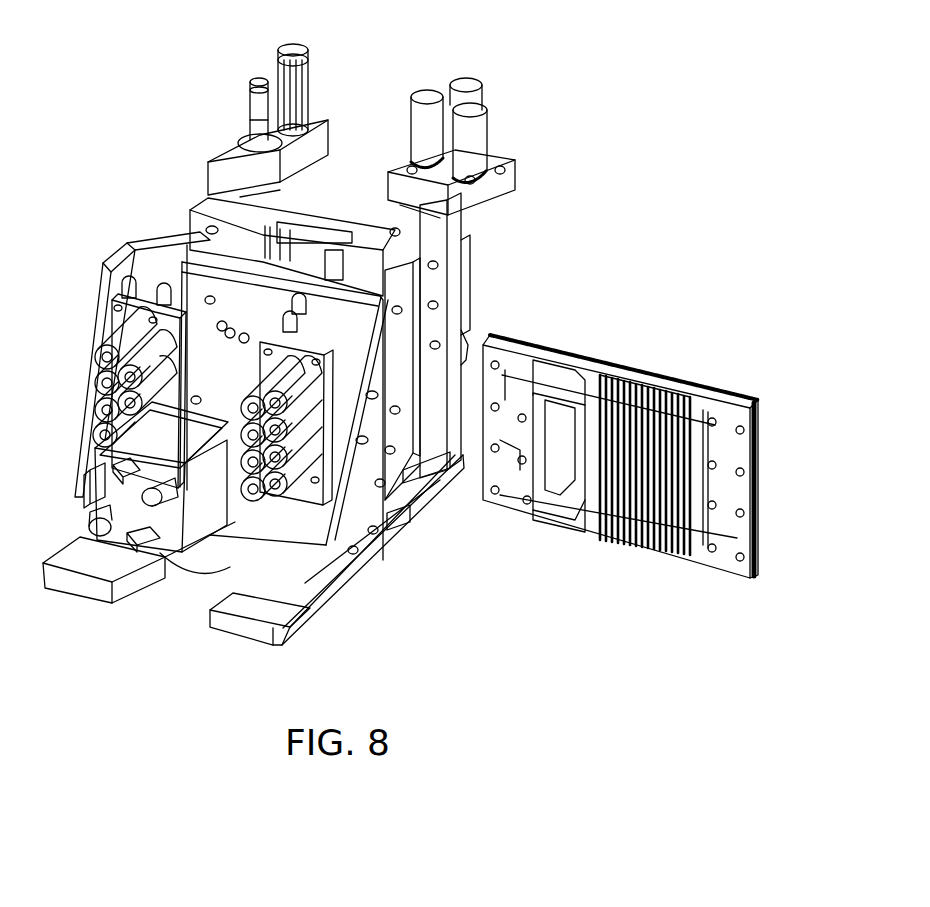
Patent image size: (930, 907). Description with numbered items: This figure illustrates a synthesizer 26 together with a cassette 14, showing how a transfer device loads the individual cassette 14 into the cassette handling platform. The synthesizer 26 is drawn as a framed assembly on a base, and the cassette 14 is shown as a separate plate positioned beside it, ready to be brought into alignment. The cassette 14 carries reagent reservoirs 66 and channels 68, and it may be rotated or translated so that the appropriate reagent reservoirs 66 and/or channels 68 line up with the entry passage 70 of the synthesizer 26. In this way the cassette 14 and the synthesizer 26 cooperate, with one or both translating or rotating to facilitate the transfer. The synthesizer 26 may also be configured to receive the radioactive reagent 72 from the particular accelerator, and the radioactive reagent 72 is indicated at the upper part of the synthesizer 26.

The cassette 14 is at (738, 405).
The synthesizer 26 is at (93, 295).
The reagent reservoirs 66 is at (760, 460).
The channels 68 is at (700, 487).
The entry passage 70 is at (410, 400).
The radioactive reagent 72 is at (490, 140).